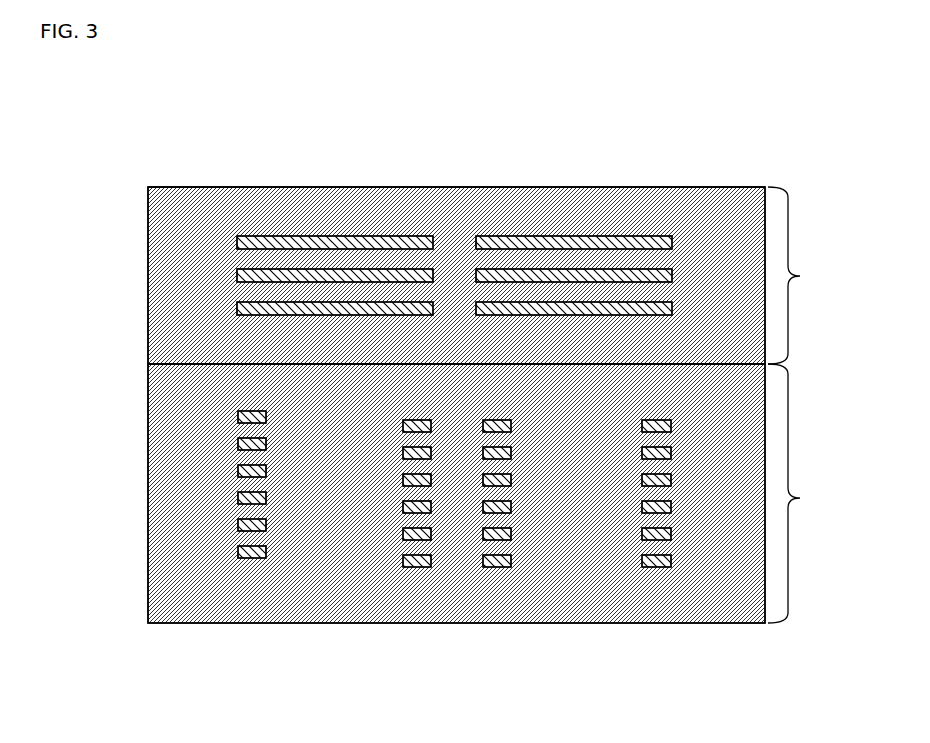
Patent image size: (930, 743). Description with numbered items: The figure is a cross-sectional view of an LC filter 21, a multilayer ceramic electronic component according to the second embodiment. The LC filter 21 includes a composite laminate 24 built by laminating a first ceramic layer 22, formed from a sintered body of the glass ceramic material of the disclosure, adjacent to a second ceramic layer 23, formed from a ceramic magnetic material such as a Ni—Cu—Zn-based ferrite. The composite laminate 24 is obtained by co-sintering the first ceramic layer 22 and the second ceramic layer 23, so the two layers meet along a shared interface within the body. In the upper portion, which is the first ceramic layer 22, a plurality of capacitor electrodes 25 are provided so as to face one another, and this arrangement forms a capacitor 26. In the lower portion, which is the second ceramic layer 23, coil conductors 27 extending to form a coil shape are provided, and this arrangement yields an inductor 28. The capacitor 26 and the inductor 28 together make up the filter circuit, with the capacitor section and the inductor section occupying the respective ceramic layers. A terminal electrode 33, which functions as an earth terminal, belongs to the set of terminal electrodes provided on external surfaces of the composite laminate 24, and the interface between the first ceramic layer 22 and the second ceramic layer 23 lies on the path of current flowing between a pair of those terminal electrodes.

The LC filter 21 is at (326, 116).
The first ceramic layer 22 is at (145, 275).
The second ceramic layer 23 is at (152, 520).
The composite laminate 24 is at (705, 170).
The capacitor electrodes 25 is at (408, 228).
The capacitor 26 is at (799, 275).
The coil conductors 27 is at (650, 560).
The inductor 28 is at (799, 493).
The terminal electrode 33 is at (165, 357).